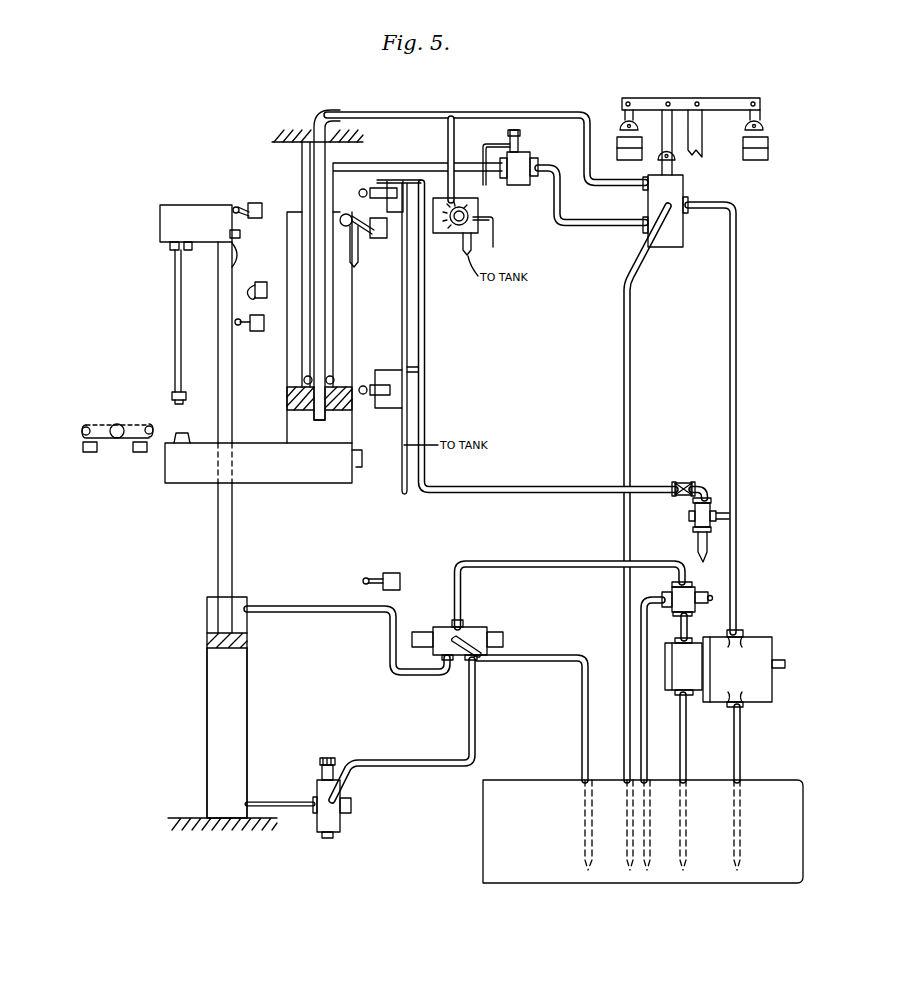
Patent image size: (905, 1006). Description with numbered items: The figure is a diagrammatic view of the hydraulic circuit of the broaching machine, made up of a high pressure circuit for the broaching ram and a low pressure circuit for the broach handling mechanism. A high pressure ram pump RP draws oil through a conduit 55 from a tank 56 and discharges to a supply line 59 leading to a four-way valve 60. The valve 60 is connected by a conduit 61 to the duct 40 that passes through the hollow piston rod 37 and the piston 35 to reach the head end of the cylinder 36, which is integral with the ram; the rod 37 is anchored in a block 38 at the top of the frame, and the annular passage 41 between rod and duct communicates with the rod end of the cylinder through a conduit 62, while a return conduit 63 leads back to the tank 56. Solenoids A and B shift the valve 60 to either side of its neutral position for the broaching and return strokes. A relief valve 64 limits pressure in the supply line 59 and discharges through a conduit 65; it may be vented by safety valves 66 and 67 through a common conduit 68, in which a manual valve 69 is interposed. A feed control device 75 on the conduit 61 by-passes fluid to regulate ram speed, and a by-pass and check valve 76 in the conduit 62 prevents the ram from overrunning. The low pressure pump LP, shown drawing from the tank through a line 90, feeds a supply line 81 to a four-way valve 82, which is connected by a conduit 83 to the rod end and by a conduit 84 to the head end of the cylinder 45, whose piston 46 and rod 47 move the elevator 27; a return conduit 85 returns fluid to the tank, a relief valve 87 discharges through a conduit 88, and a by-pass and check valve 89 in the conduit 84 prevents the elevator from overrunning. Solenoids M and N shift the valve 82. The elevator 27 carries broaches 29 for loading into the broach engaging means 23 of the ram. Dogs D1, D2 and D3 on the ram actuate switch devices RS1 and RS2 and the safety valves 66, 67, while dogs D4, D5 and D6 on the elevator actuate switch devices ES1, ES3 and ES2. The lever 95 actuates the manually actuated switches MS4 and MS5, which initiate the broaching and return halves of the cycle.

The broach engaging means 23 is at (185, 440).
The elevator 27 is at (177, 208).
The broach 29 is at (175, 305).
The piston 35 is at (340, 411).
The cylinder 36 is at (360, 304).
The piston rod 37 is at (287, 374).
The block 38 is at (283, 128).
The duct 40 is at (313, 265).
The annular passage 41 is at (307, 350).
The cylinder 45 is at (215, 695).
The piston 46 is at (207, 637).
The rod 47 is at (233, 526).
The conduit 55 is at (742, 750).
The tank 56 is at (795, 850).
The supply line 59 is at (740, 385).
The four-way valve 60 is at (686, 183).
The conduit 61 is at (484, 111).
The conduit 62 is at (580, 228).
The return conduit 63 is at (622, 375).
The relief valve 64 is at (690, 517).
The conduit 65 is at (708, 546).
The safety valve 66 is at (395, 400).
The safety valve 67 is at (373, 186).
The common conduit 68 is at (533, 487).
The valve 69 is at (686, 476).
The feed control device 75 is at (452, 238).
The by-pass and check valve 76 is at (522, 186).
The fluid supply line 81 is at (510, 561).
The four-way valve 82 is at (475, 634).
The conduit 83 is at (305, 605).
The conduit 84 is at (425, 768).
The return conduit 85 is at (552, 664).
The relief valve 87 is at (688, 596).
The conduit 88 is at (640, 625).
The by-pass and check valve 89 is at (328, 838).
The pipe 90 is at (687, 760).
The lever 95 is at (135, 424).
The solenoid A is at (769, 150).
The solenoid B is at (617, 152).
The cam dog D1 is at (342, 226).
The dog D2 is at (357, 469).
The dog D3 is at (354, 263).
The dog D4 is at (238, 205).
The dog D5 is at (237, 270).
The dog D6 is at (241, 235).
The switch device ES1 is at (275, 191).
The switch device ES2 is at (270, 280).
The switch device ES3 is at (257, 331).
The low pressure pump LP is at (670, 665).
The solenoid M is at (418, 632).
The manually actuated switch MS4 is at (140, 453).
The manually actuated switch MS5 is at (87, 453).
The solenoid N is at (498, 634).
The ram pump RP is at (752, 632).
The switch device RS1 is at (383, 239).
The switch device RS2 is at (396, 575).